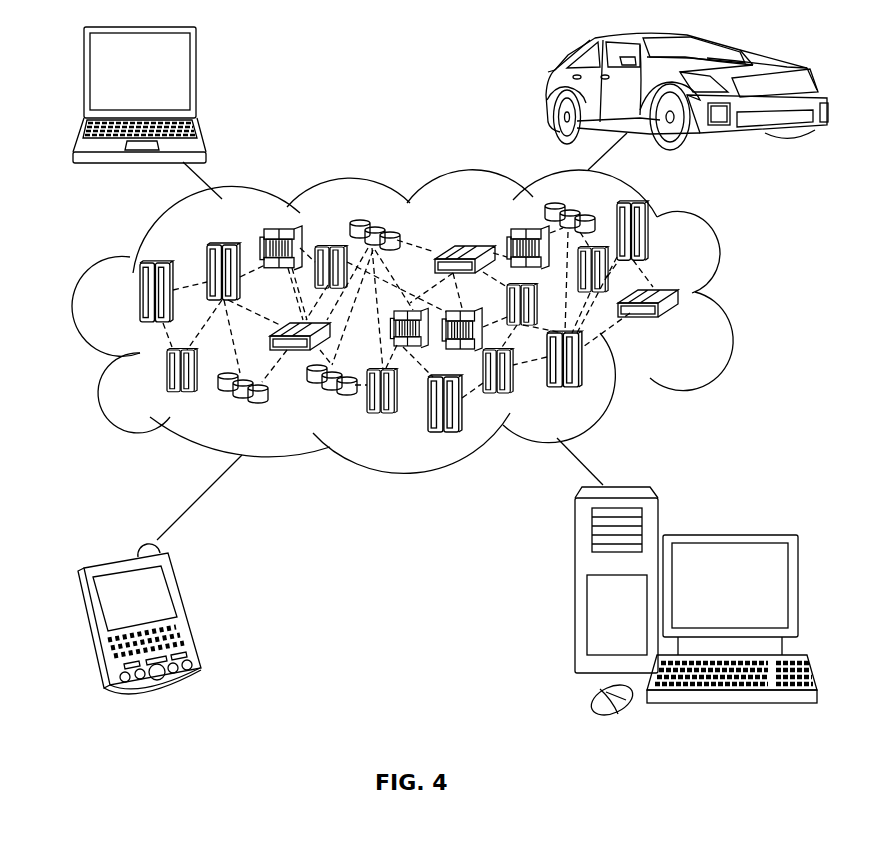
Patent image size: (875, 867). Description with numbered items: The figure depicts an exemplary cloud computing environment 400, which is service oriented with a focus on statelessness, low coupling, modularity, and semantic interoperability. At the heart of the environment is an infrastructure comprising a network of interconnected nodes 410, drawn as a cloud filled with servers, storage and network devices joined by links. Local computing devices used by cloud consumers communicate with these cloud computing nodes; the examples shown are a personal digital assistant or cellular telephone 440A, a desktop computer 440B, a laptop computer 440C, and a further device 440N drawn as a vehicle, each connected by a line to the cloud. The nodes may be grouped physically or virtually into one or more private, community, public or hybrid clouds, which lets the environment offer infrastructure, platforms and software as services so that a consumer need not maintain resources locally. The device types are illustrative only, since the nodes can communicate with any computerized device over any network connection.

The network 400 is at (731, 300).
The network nodes and communication links 410 is at (683, 325).
The personal digital assistant (PDA) or cellular telephone 440A is at (188, 609).
The desktop computer 440B is at (728, 533).
The laptop computer 440C is at (197, 78).
The vehicle 440N is at (552, 92).